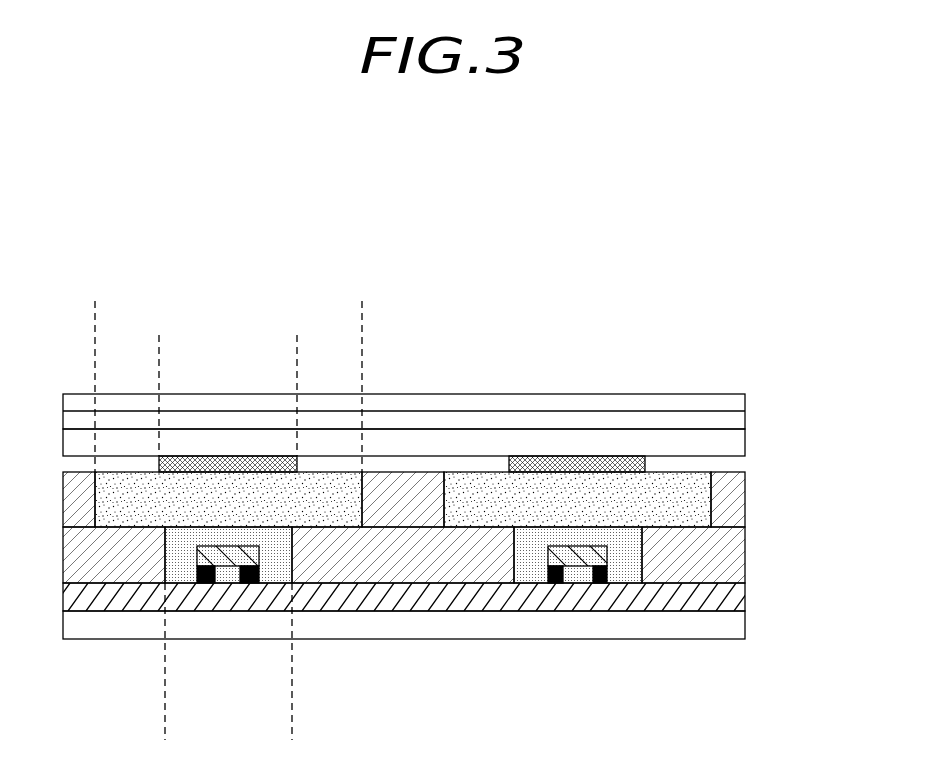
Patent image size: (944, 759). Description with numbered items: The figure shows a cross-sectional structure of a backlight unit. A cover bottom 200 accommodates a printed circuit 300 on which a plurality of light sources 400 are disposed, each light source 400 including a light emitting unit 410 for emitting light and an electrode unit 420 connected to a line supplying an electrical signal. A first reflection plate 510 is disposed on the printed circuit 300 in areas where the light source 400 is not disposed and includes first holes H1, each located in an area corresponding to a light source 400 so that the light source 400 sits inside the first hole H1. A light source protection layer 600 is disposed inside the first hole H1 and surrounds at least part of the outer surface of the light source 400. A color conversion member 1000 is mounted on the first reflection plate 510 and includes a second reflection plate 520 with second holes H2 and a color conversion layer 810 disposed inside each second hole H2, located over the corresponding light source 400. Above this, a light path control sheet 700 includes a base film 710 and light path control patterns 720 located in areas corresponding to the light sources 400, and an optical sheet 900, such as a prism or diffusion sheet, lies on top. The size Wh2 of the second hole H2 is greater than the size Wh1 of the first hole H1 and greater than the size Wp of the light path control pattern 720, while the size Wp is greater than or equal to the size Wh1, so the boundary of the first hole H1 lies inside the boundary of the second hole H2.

The optical sheet 900 is at (747, 394).
The base film 710 is at (732, 442).
The light path control pattern 720 is at (645, 462).
The light path control sheet 700 is at (468, 453).
The color conversion layer 810 is at (713, 490).
The second reflection plate 520 is at (733, 517).
The color conversion member 1000 is at (472, 502).
The first reflection plate 510 is at (733, 557).
The light source protection layer 600 is at (275, 565).
The light emitting unit 410 is at (546, 557).
The electrode unit 420 is at (555, 583).
The light source 400 is at (402, 638).
The printed circuit 300 is at (733, 597).
The cover bottom 200 is at (733, 623).
The first hole H1 is at (174, 562).
The second hole H2 is at (108, 500).
The size of the first hole Wh1 is at (175, 728).
The size of the second hole Wh2 is at (105, 313).
The size of the light path control pattern Wp is at (169, 349).